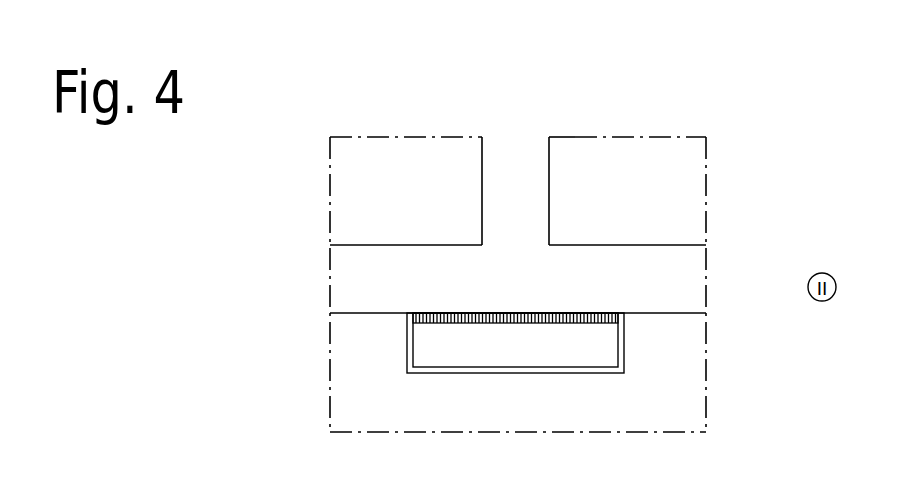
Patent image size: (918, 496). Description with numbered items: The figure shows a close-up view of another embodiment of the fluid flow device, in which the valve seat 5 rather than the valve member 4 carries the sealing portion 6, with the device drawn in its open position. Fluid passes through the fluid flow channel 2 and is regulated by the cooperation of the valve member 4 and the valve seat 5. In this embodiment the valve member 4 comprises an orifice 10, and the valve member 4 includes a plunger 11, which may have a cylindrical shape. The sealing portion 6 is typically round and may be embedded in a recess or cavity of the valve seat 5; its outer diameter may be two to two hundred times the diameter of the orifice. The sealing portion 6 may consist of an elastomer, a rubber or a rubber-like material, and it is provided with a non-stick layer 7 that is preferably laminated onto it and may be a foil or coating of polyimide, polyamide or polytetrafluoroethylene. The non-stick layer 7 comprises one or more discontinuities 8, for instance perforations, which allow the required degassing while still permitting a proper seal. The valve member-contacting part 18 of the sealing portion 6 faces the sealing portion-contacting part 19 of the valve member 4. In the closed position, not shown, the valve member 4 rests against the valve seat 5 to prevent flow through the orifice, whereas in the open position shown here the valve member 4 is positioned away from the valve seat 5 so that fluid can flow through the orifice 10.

The fluid flow channel 2 is at (520, 168).
The valve member 4 is at (388, 199).
The valve seat 5 is at (380, 366).
The sealing portion 6 is at (590, 337).
The non-stick layer 7 is at (538, 313).
The discontinuity of the layer 8 is at (494, 313).
The orifice in valve member 10 is at (520, 225).
The plunger 11 is at (642, 232).
The valve member-contacting part of the sealing portion 18 is at (470, 318).
The sealing portion-contacting part of the valve member 19 is at (468, 245).